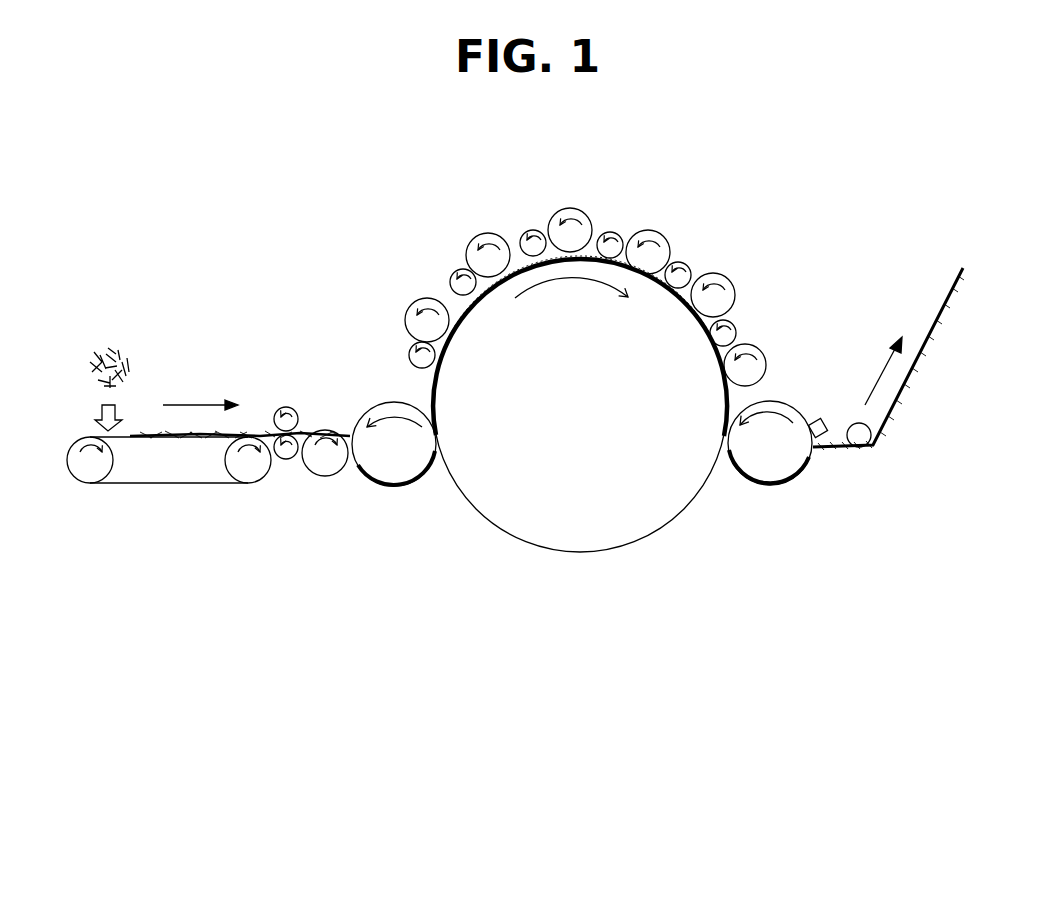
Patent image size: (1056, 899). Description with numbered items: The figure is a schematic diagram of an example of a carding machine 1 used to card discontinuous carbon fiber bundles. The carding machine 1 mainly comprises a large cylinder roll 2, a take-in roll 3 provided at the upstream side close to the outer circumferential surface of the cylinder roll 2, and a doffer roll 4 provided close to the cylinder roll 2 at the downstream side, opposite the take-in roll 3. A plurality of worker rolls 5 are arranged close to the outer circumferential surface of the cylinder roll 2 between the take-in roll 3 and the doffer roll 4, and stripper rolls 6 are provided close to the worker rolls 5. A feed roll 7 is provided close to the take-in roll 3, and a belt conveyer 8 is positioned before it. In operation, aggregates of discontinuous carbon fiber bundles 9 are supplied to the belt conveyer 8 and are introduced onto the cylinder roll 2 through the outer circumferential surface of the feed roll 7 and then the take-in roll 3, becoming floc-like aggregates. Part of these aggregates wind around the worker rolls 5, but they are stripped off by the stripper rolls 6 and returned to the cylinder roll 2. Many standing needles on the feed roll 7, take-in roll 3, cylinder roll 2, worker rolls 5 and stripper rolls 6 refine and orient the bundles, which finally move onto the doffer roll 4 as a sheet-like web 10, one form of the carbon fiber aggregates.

The carding machine 1 is at (430, 718).
The cylinder roll 2 is at (510, 537).
The take-in roll 3 is at (360, 480).
The doffer roll 4 is at (790, 487).
The worker rolls 5 is at (578, 212).
The stripper rolls 6 is at (528, 233).
The feed roll 7 is at (310, 477).
The belt conveyer 8 is at (173, 488).
The carbon fiber bundles 9 is at (107, 337).
The sheet-like web 10 is at (917, 373).